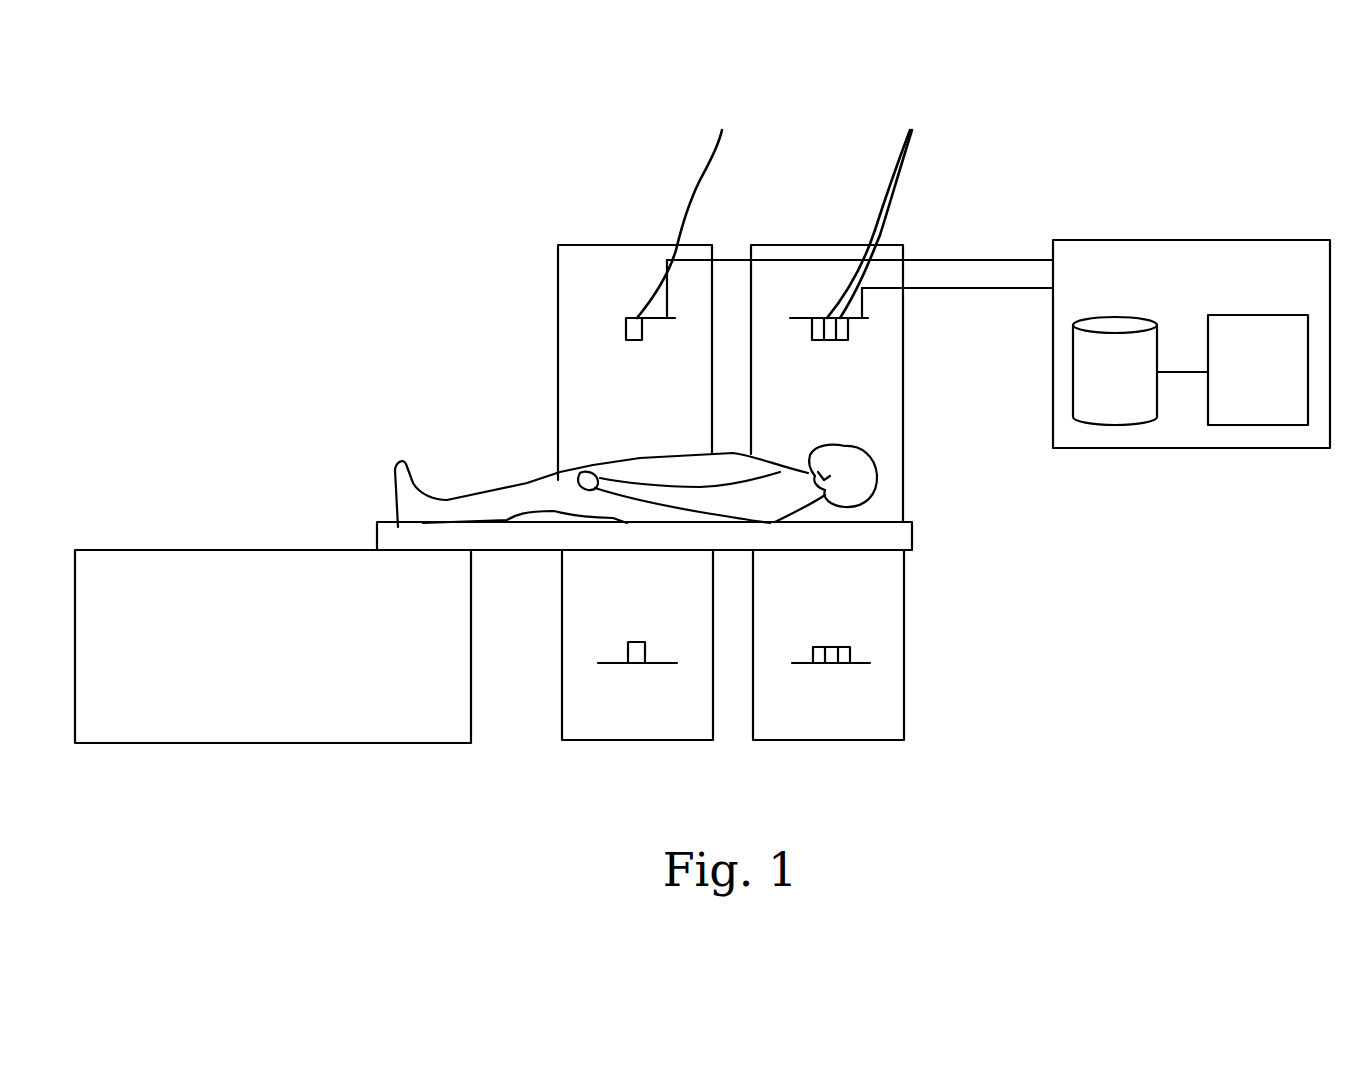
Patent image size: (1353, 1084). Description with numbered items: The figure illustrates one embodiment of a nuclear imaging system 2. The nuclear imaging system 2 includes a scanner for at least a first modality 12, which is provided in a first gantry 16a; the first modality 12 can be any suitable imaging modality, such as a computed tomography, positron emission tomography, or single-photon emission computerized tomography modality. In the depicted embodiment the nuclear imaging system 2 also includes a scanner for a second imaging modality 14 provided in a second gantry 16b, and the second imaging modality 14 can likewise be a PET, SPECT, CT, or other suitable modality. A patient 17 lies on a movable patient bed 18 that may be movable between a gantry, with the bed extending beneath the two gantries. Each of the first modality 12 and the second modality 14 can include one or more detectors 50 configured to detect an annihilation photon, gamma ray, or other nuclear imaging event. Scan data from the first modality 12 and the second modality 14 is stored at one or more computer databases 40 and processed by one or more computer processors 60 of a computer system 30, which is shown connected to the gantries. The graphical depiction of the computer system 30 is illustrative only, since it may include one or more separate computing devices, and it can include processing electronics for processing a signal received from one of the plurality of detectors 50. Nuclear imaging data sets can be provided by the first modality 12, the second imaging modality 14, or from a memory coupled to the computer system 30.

The nuclear imaging system 2 is at (292, 322).
The first modality 12 is at (626, 318).
The second imaging modality 14 is at (868, 322).
The first gantry 16a is at (633, 245).
The second gantry 16b is at (822, 245).
The patient 17 is at (528, 483).
The movable patient bed 18 is at (385, 526).
The computer system 30 is at (1085, 240).
The computer database 40 is at (1098, 410).
The detector 50 is at (787, 209).
The computer processor 60 is at (1248, 390).